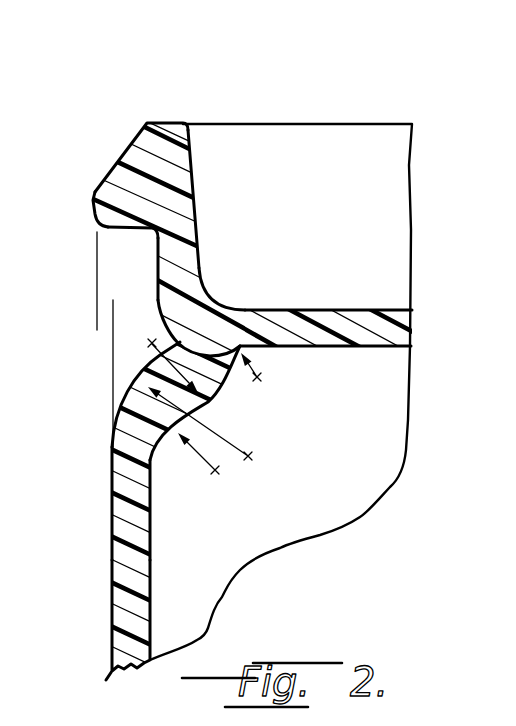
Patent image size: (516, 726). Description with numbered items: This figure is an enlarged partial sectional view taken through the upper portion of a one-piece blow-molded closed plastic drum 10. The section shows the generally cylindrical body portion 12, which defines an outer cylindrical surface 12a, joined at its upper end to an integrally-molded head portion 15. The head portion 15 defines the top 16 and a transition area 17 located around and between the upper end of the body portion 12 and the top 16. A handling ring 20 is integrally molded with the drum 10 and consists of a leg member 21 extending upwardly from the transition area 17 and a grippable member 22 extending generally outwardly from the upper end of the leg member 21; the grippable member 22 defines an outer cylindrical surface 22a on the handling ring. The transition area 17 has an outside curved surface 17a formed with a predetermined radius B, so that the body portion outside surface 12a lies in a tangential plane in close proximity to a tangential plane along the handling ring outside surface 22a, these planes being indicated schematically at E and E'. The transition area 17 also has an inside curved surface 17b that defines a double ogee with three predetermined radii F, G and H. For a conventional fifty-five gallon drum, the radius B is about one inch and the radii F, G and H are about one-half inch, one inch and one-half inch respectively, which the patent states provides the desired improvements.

The drum 10 is at (324, 102).
The cylindrical body portion 12 is at (100, 621).
The outer cylindrical surface 12a is at (112, 465).
The head portion 15 is at (361, 298).
The top 16 is at (281, 312).
The transition area 17 is at (134, 346).
The outside curved surface 17a is at (112, 392).
The inside curved surface 17b is at (210, 398).
The handling ring 20 is at (208, 184).
The leg member 21 is at (198, 245).
The grippable member 22 is at (119, 172).
The outer cylindrical surface 22a is at (95, 210).
The tangential plane E' is at (60, 281).
The tangential plane E is at (77, 373).
The predetermined radius G is at (182, 366).
The predetermined radius F is at (257, 375).
The predetermined radius B is at (220, 438).
The predetermined radius H is at (200, 455).